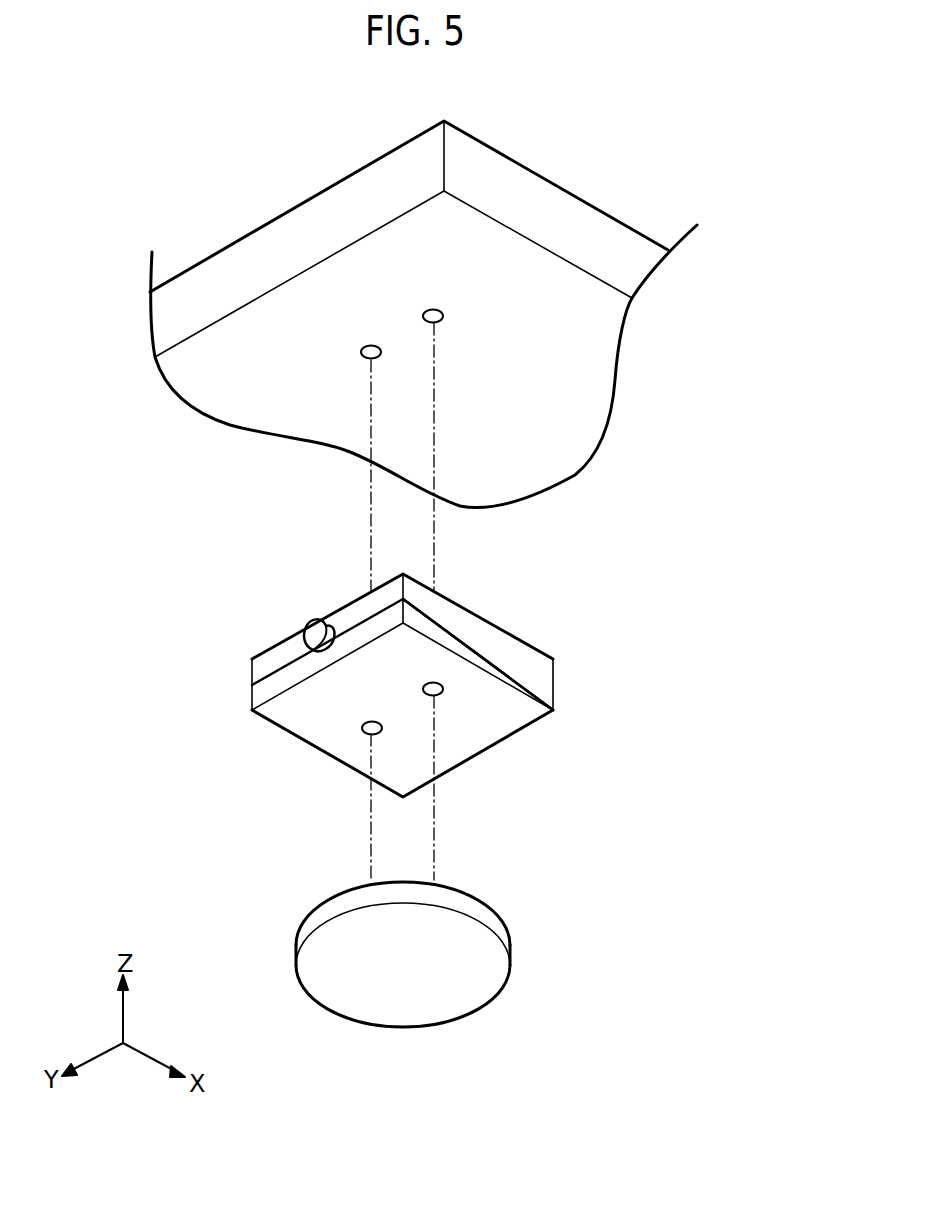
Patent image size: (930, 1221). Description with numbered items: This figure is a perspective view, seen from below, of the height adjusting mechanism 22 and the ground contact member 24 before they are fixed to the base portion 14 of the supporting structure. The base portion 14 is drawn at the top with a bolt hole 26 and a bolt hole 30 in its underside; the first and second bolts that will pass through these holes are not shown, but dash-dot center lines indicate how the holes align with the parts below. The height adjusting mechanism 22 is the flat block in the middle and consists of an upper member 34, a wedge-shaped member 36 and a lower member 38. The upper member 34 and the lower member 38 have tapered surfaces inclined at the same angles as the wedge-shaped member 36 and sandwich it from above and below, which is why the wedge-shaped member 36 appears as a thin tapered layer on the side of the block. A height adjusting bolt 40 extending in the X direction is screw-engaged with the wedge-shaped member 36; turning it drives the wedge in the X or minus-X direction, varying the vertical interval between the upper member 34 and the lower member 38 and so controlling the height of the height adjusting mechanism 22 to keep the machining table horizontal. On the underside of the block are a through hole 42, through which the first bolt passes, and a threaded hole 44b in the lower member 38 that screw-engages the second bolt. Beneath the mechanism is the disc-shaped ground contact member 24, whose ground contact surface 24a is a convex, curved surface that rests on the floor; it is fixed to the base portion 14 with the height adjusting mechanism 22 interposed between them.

The base portion 14 is at (527, 182).
The height adjusting mechanism 22 is at (434, 685).
The ground contact member 24 is at (423, 953).
The ground contact surface 24a is at (450, 988).
The bolt hole 26 is at (361, 355).
The bolt hole 30 is at (445, 311).
The upper member 34 is at (455, 610).
The wedge-shaped member 36 is at (545, 678).
The lower member 38 is at (512, 722).
The height adjusting bolt 40 is at (305, 624).
The through hole 42 is at (362, 726).
The threaded hole 44b is at (424, 687).